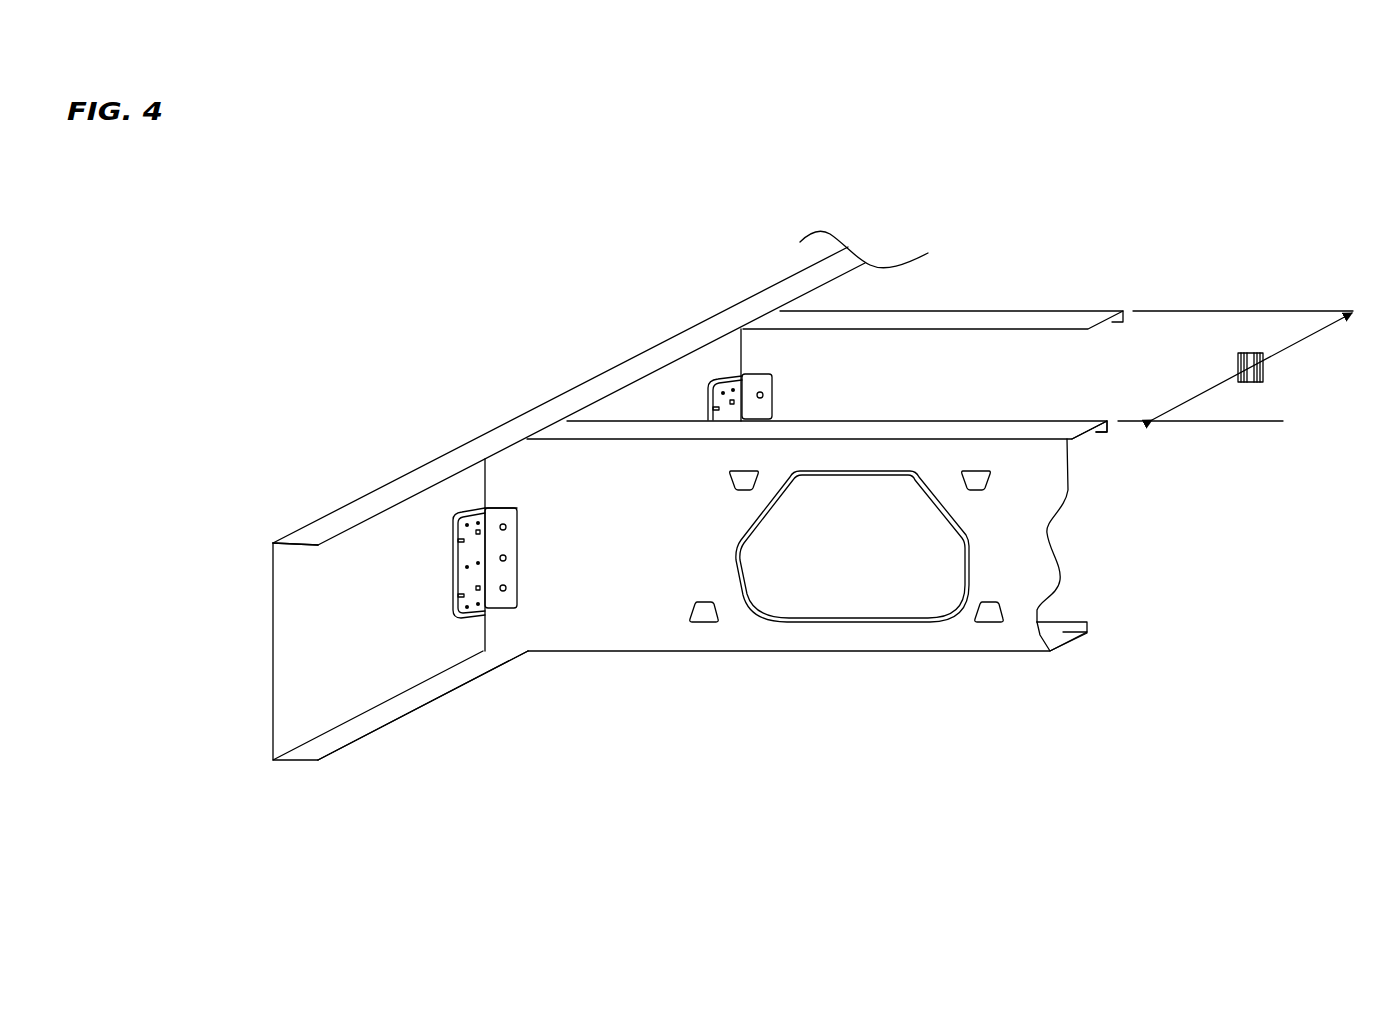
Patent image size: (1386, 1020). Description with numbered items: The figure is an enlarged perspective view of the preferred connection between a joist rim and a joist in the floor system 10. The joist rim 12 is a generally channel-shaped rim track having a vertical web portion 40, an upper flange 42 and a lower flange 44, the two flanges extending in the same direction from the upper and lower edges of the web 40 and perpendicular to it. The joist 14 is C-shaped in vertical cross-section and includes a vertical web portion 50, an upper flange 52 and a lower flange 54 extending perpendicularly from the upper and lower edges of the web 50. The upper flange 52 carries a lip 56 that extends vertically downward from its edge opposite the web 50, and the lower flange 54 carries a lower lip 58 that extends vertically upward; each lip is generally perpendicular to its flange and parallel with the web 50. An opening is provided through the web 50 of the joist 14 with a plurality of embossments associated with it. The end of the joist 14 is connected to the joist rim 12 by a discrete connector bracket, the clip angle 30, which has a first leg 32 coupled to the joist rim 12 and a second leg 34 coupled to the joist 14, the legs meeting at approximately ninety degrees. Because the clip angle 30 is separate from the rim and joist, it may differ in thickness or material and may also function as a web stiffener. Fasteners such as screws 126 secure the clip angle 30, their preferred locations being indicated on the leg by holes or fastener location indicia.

The floor system 10 is at (610, 760).
The joist rim 12 is at (608, 355).
The joist 14 is at (804, 510).
The clip angle 30 is at (497, 546).
The first leg 32 is at (463, 578).
The second leg 34 is at (507, 508).
The vertical web portion 40 is at (273, 650).
The upper flange 42 is at (323, 545).
The lower flange 44 is at (367, 738).
The vertical web portion 50 is at (660, 632).
The upper flange 52 is at (973, 420).
The lower flange 54 is at (1057, 638).
The lip 56 is at (1113, 420).
The lower lip 58 is at (1067, 625).
The screws 126 is at (507, 588).